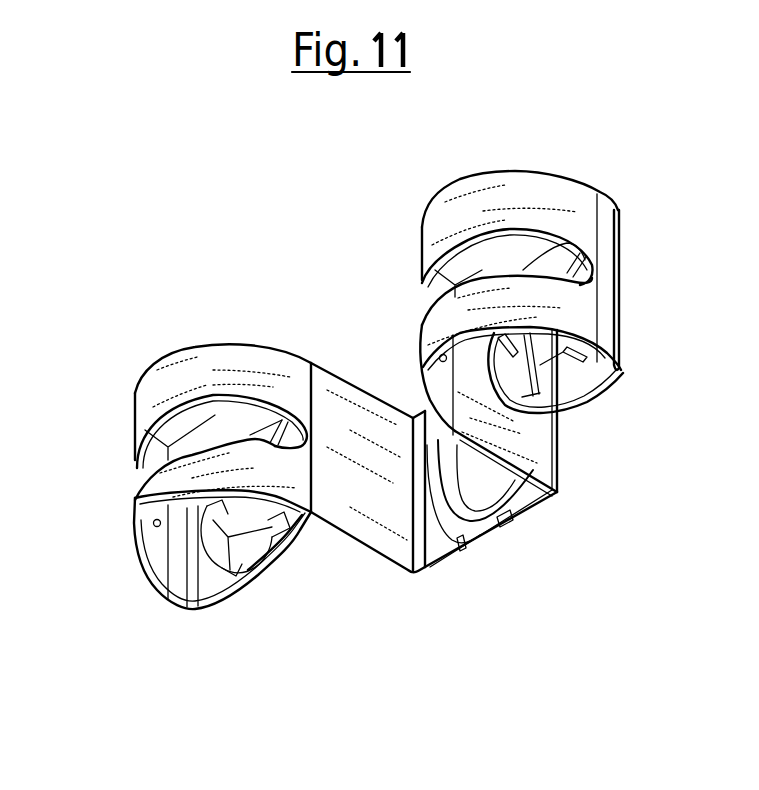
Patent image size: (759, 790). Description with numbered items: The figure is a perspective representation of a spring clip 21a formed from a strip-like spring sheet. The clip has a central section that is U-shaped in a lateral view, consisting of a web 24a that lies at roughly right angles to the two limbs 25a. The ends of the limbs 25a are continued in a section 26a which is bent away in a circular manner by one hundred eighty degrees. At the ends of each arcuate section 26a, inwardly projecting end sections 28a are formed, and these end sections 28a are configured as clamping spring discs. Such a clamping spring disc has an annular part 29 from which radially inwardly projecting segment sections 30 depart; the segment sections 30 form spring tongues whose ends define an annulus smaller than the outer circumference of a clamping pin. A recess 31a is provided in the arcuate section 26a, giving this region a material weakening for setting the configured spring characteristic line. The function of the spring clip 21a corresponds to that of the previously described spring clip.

The spring clip 21a is at (368, 256).
The recess 31a is at (200, 443).
The section 26a is at (542, 197).
The segment sections 30 is at (518, 340).
The end sections 28a is at (583, 360).
The annular part 29 is at (590, 390).
The limbs 25a is at (373, 533).
The web 24a is at (537, 497).